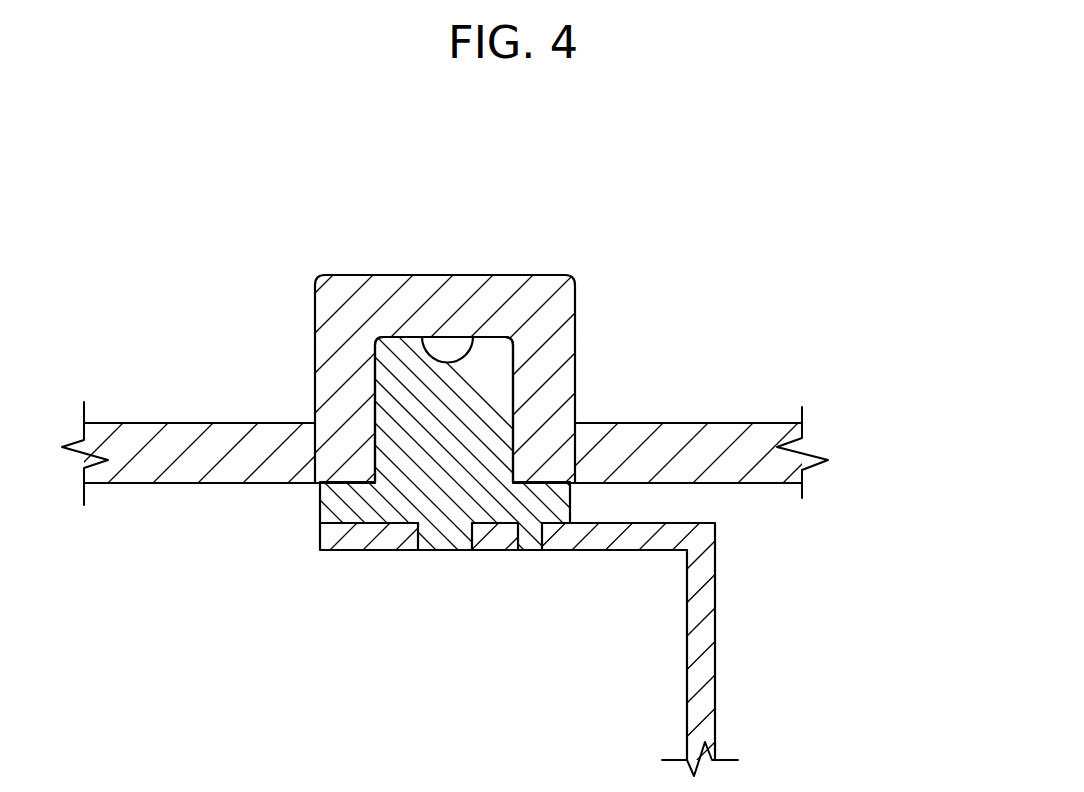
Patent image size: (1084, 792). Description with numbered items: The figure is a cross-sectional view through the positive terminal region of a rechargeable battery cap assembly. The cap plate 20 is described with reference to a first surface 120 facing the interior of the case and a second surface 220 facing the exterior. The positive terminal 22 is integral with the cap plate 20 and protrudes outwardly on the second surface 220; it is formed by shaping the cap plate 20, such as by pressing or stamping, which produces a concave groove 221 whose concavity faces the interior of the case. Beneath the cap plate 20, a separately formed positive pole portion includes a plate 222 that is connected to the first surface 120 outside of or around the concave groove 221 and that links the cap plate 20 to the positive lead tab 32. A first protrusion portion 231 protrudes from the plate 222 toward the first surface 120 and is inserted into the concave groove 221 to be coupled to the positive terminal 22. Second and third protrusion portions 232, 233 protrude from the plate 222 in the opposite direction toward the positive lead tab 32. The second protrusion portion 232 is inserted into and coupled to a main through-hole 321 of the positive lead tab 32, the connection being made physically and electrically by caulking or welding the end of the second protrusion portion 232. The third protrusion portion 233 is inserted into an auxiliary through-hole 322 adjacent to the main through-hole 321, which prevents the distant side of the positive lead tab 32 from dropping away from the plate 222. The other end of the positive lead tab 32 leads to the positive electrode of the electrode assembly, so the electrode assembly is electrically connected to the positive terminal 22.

The cap plate 20 is at (905, 382).
The second surface 220 is at (748, 423).
The first surface 120 is at (748, 483).
The positive terminal 22 is at (373, 297).
The concave groove 221 is at (422, 338).
The plate 222 is at (320, 498).
The first protrusion portion 231 is at (478, 387).
The second protrusion portion 232 is at (453, 533).
The third protrusion portion 233 is at (538, 532).
The positive lead tab 32 is at (702, 637).
The main through-hole 321 is at (422, 533).
The auxiliary through-hole 322 is at (523, 540).